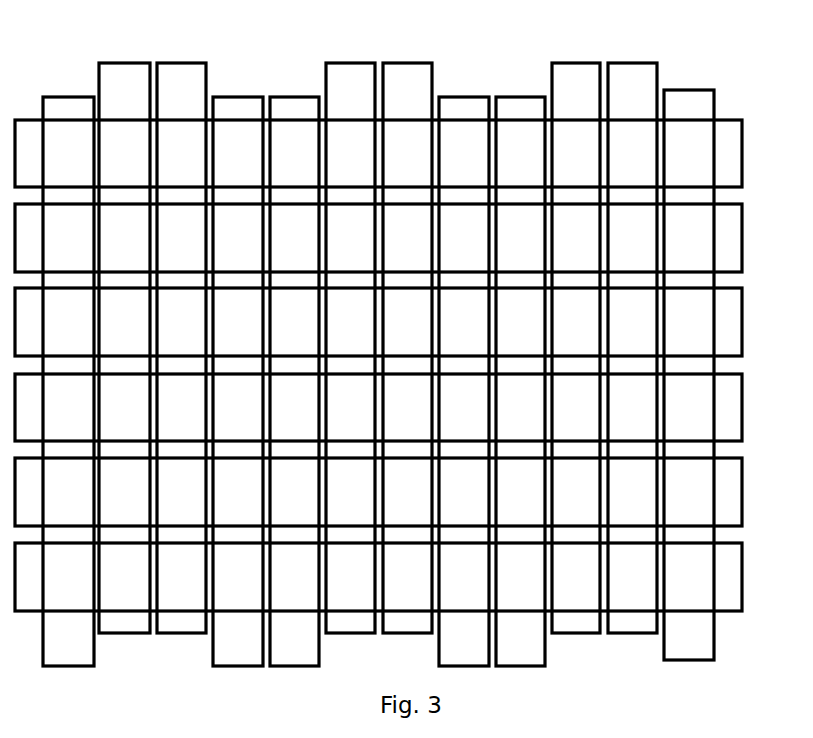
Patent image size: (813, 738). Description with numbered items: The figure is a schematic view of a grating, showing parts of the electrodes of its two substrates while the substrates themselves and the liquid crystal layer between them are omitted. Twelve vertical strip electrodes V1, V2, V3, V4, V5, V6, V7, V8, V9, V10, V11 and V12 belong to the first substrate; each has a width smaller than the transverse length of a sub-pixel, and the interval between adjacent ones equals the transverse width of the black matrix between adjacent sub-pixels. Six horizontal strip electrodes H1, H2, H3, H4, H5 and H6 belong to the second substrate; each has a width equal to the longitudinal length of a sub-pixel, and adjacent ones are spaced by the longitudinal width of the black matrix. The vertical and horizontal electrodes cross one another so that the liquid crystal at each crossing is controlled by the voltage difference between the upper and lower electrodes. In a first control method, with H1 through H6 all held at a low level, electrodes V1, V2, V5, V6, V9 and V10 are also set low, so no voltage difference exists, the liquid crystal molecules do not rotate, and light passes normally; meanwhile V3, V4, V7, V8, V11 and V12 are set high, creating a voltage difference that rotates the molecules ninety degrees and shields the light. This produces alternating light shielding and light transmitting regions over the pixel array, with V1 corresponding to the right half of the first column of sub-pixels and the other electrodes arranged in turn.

The electrode of the second substrate H1 is at (405, 153).
The electrode of the second substrate H2 is at (405, 238).
The electrode of the second substrate H3 is at (405, 322).
The electrode of the second substrate H4 is at (405, 407).
The electrode of the second substrate H5 is at (405, 492).
The electrode of the second substrate H6 is at (405, 577).
The electrode of the first substrate V1 is at (68, 357).
The electrode of the first substrate V2 is at (124, 327).
The electrode of the first substrate V3 is at (181, 327).
The electrode of the first substrate V4 is at (238, 357).
The electrode of the first substrate V5 is at (294, 357).
The electrode of the first substrate V6 is at (350, 327).
The electrode of the first substrate V7 is at (407, 327).
The electrode of the first substrate V8 is at (464, 357).
The electrode of the first substrate V9 is at (520, 357).
The electrode of the first substrate V10 is at (574, 327).
The electrode of the first substrate V11 is at (631, 327).
The electrode of the first substrate V12 is at (685, 355).